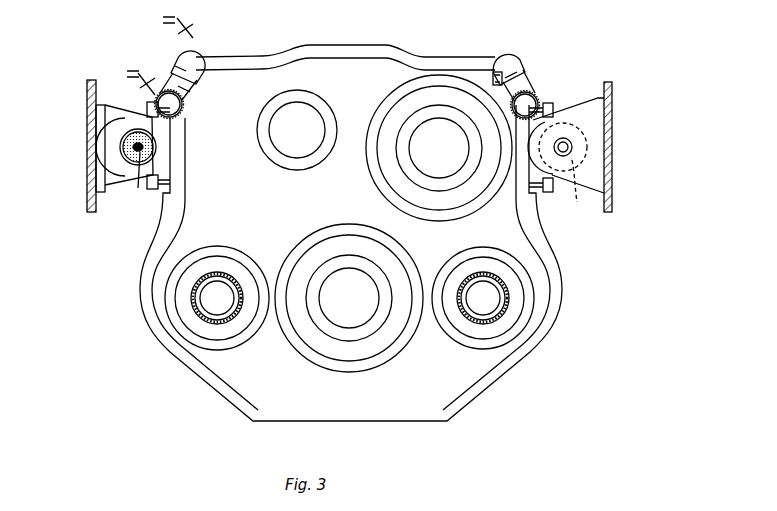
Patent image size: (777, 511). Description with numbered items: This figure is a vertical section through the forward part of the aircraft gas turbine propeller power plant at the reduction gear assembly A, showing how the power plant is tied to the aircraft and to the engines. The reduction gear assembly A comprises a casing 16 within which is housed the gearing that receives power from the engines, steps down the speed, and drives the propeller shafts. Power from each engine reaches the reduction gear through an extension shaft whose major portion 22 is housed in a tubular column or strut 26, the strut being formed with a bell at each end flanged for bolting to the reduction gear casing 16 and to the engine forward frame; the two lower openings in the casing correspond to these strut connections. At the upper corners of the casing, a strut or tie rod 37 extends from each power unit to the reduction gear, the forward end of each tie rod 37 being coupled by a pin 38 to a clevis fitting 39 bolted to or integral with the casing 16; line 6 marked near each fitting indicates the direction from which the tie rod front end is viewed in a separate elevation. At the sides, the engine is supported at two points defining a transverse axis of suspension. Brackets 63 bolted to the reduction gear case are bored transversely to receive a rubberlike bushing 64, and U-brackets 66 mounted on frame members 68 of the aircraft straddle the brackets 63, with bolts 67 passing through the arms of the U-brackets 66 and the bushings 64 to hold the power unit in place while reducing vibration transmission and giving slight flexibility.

The reduction gear assembly A is at (351, 247).
The casing 16 is at (437, 405).
The major portion of the shaft 22 is at (222, 287).
The tubular column or strut 26 is at (226, 318).
The strut or tie rod 37 is at (184, 101).
The pin 38 is at (494, 75).
The clevis fitting 39 is at (196, 65).
The brackets 63 is at (165, 183).
The rubberlike bushing 64 is at (362, 185).
The U-brackets 66 is at (113, 186).
The bolts 67 is at (126, 140).
The frame members 68 is at (88, 172).
The line 6— 6 is at (149, 56).